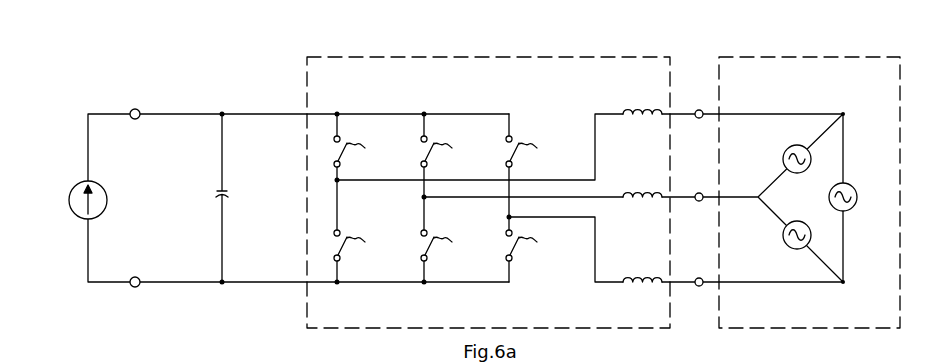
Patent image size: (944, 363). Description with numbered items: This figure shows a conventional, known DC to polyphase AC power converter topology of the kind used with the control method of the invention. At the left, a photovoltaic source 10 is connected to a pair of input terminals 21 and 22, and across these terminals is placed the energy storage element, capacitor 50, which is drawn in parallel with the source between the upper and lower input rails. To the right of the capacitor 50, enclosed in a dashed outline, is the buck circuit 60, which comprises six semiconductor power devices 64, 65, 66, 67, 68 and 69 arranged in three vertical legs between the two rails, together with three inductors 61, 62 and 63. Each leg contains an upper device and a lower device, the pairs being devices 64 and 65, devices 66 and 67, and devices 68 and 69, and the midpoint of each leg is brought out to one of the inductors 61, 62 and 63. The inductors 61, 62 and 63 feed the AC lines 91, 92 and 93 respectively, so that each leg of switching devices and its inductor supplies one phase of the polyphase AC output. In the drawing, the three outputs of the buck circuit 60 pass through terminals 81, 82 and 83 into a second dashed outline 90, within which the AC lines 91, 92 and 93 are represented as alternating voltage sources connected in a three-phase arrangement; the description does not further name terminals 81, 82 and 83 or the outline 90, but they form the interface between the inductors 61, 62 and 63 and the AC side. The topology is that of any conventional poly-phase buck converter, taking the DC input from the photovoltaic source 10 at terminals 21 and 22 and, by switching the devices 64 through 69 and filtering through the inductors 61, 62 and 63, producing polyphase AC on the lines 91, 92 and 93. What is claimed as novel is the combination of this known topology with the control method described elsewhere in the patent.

The photovoltaic source 10 is at (71, 187).
The input terminal 21 is at (135, 108).
The input terminal 22 is at (135, 288).
The capacitor 50 is at (229, 192).
The buck circuit 60 is at (485, 57).
The inductor 61 is at (640, 107).
The inductor 62 is at (640, 191).
The inductor 63 is at (640, 285).
The semiconductor power device 64 is at (361, 151).
The semiconductor power device 65 is at (361, 245).
The semiconductor power device 66 is at (448, 151).
The semiconductor power device 67 is at (448, 245).
The semiconductor power device 68 is at (533, 151).
The semiconductor power device 69 is at (533, 245).
The output terminal 81 is at (699, 108).
The output terminal 82 is at (699, 191).
The output terminal 83 is at (699, 287).
The three-phase grid / load 90 is at (818, 56).
The AC line 91 is at (784, 157).
The AC line 92 is at (784, 235).
The AC line 93 is at (855, 202).